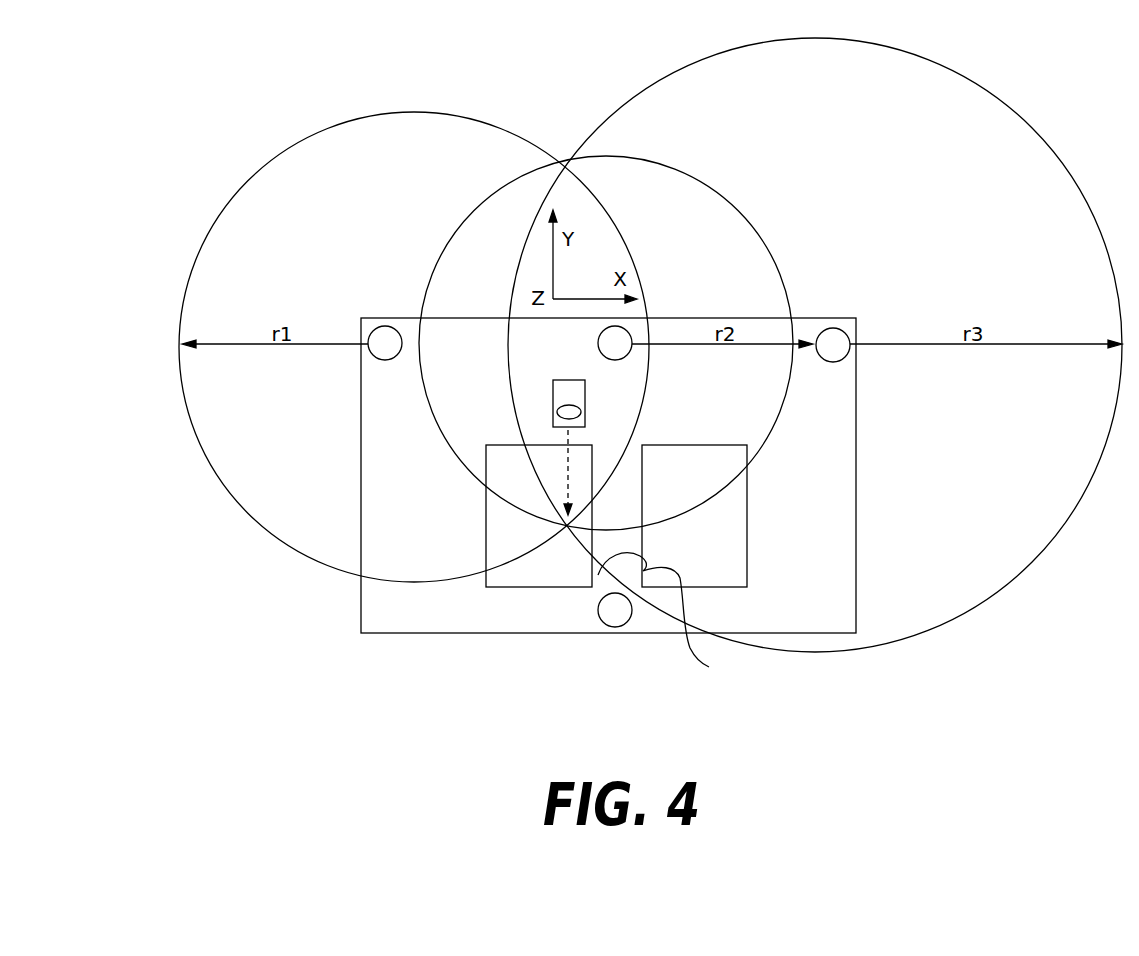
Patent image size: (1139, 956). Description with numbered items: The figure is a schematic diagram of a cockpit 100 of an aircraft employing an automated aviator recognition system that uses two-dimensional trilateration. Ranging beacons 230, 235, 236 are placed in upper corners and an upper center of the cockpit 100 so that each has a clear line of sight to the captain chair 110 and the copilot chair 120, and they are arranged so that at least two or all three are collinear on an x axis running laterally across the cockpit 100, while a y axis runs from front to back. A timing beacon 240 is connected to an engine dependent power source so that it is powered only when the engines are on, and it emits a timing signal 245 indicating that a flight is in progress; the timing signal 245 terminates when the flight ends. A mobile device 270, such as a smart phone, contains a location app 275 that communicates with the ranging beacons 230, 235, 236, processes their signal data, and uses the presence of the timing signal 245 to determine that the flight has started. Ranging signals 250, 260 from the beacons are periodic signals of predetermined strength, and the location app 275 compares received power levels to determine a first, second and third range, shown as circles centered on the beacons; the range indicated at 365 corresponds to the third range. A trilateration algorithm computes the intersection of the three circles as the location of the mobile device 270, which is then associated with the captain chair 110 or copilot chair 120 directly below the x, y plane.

The cockpit 100 is at (361, 596).
The captain chair 110 is at (486, 541).
The copilot chair 120 is at (747, 541).
The ranging beacon 230 is at (598, 343).
The ranging beacon 235 is at (385, 361).
The ranging beacon 236 is at (833, 363).
The timing beacon 240 is at (614, 628).
The timing signal 245 is at (677, 617).
The ranging signal 250 is at (298, 345).
The ranging signal 260 is at (738, 347).
The mobile device 270 is at (585, 398).
The location app 275 is at (594, 414).
The third range r3 365 is at (1027, 366).